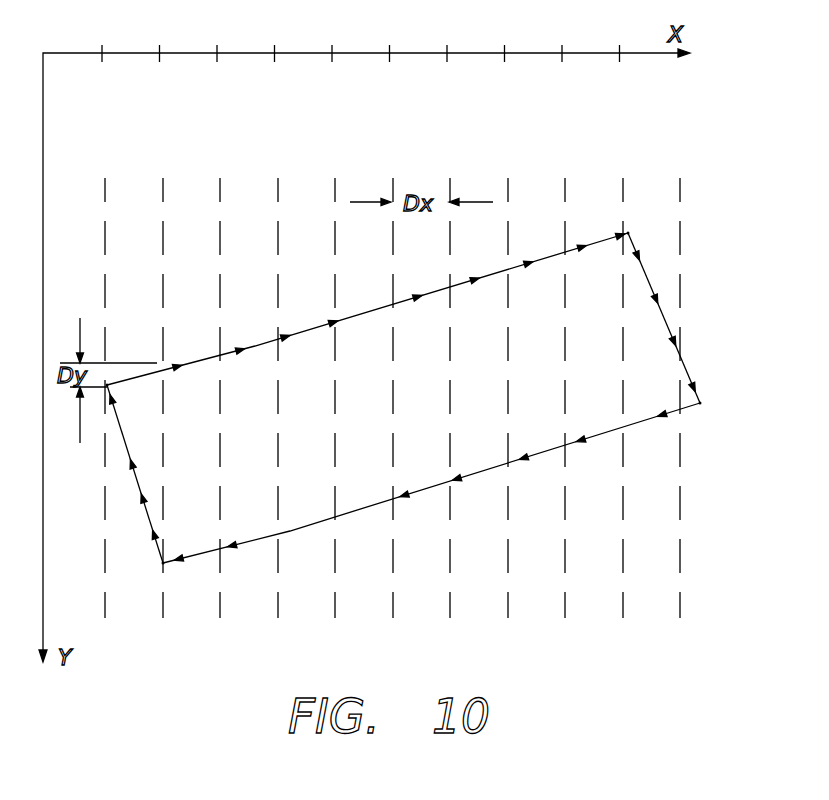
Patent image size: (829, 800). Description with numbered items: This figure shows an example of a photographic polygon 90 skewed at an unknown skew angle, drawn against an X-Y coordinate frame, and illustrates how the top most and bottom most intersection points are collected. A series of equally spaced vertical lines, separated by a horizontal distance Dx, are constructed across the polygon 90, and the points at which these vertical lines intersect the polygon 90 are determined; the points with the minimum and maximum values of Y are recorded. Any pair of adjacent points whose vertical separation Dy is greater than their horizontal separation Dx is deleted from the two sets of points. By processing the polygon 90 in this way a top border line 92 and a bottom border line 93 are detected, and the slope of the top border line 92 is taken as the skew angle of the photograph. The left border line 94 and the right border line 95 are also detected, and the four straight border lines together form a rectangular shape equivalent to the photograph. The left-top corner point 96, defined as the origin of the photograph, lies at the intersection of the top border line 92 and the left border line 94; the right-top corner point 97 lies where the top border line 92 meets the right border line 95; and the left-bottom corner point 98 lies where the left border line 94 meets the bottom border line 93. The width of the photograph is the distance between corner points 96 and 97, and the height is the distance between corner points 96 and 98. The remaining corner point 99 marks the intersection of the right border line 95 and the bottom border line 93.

The polygon 90 is at (201, 177).
The top border line 92 is at (362, 313).
The bottom border line 93 is at (365, 507).
The left border line 94 is at (137, 480).
The right border line 95 is at (650, 280).
The left-top corner point 96 is at (108, 384).
The right-top corner point 97 is at (628, 233).
The left-bottom corner point 98 is at (163, 563).
The third corner point 99 is at (700, 403).